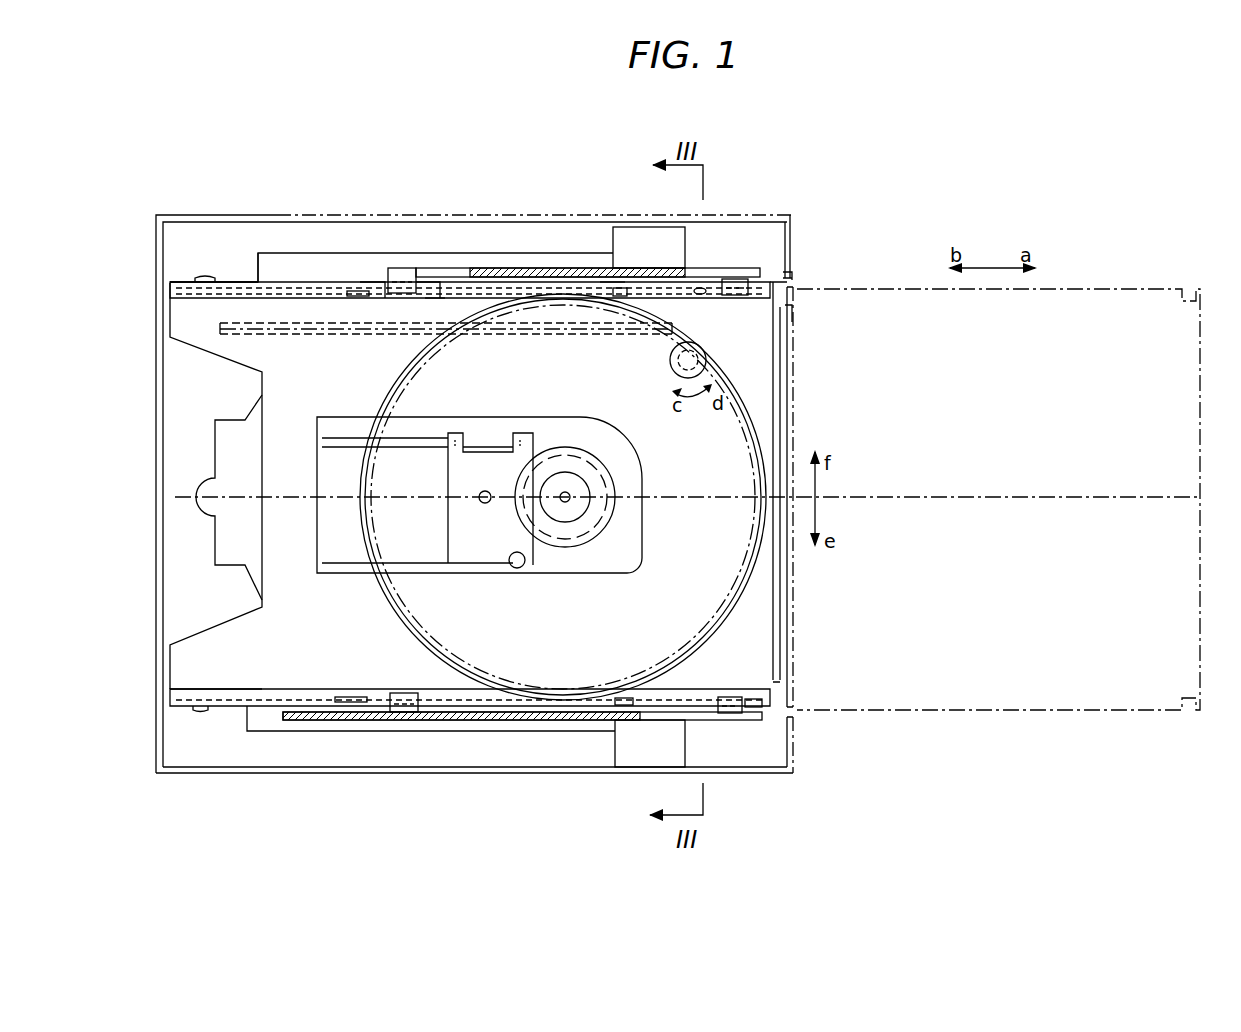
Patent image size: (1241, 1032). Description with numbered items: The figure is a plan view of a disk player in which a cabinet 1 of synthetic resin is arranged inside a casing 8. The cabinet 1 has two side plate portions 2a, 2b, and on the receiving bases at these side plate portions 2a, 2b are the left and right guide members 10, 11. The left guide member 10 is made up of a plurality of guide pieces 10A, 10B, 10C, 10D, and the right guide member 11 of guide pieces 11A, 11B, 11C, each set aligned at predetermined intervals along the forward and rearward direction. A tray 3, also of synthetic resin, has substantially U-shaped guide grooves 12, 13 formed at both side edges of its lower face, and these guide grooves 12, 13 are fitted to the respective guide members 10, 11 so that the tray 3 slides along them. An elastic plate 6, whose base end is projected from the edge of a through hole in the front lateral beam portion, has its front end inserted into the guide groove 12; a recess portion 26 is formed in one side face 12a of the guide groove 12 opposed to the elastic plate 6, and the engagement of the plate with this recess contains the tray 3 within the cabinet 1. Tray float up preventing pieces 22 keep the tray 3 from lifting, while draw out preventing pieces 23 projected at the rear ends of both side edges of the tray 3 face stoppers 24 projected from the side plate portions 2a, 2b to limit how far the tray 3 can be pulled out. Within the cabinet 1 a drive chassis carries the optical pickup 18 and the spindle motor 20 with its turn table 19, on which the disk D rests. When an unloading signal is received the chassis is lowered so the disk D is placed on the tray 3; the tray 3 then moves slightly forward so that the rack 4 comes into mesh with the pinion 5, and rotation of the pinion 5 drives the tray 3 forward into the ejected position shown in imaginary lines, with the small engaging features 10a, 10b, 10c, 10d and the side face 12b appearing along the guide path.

The cabinet 1 is at (258, 245).
The side plate portion 2a is at (516, 267).
The side plate portion 2b is at (528, 722).
The tray 3 is at (770, 602).
The rack 4 is at (380, 339).
The pinion 5 is at (670, 357).
The elastic plate 6 is at (696, 344).
The casing 8 is at (330, 774).
The guide member 10 is at (334, 278).
The guide piece 10A is at (372, 289).
The guide piece 10B is at (426, 300).
The guide piece 10C is at (608, 272).
The guide piece 10D is at (790, 274).
The engaging piece 10a is at (358, 295).
The engaging piece 10b is at (430, 297).
The engaging piece 10c is at (615, 294).
The engaging piece 10d is at (792, 320).
The guide member 11 is at (318, 688).
The guide piece 11A is at (352, 695).
The guide piece 11B is at (620, 696).
The guide piece 11C is at (752, 697).
The guide groove 12 is at (190, 288).
The side face 12a is at (280, 281).
The side wall portion 12b is at (229, 280).
The guide groove 13 is at (262, 690).
The optical pickup 18 is at (450, 528).
The turn table 19 is at (612, 478).
The spindle motor 20 is at (612, 520).
The tray float up preventing piece 22 is at (402, 267).
The draw out preventing piece 23 is at (205, 279).
The stopper 24 is at (648, 270).
The recess portion 26 is at (702, 289).
The disk D is at (770, 420).